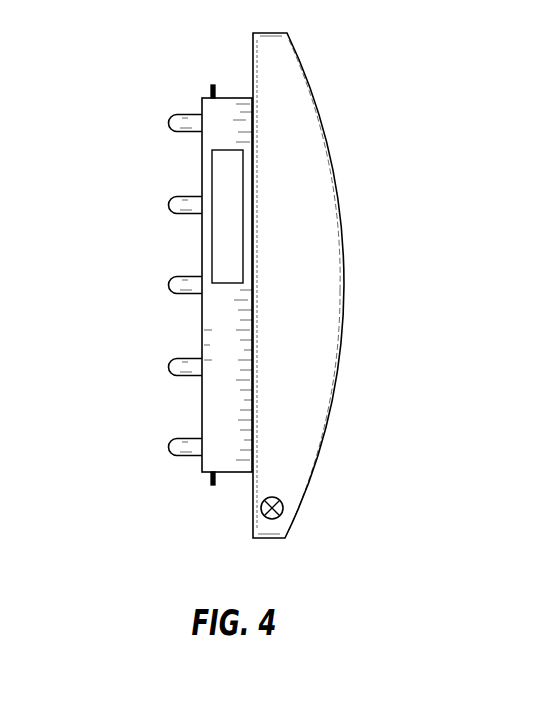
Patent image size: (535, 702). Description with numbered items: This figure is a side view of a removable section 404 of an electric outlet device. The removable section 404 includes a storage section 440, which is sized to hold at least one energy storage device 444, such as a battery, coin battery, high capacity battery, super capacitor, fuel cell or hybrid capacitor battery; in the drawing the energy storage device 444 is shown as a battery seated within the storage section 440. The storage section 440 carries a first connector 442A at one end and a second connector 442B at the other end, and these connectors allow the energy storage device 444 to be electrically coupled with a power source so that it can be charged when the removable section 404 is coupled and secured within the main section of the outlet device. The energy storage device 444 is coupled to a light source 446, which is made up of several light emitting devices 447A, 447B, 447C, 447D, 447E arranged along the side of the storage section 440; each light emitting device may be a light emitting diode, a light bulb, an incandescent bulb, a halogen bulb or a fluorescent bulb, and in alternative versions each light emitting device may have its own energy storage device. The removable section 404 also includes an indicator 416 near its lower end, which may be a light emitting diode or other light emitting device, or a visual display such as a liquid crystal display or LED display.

The removable section 404 is at (373, 177).
The storage section 440 is at (243, 98).
The first connector 442A is at (210, 94).
The second connector 442B is at (209, 478).
The energy storage device 444 is at (215, 192).
The light source 446 is at (131, 270).
The light emitting device 447A is at (168, 122).
The light emitting device 447B is at (168, 204).
The light emitting device 447C is at (168, 285).
The light emitting device 447D is at (168, 367).
The light emitting device 447E is at (168, 447).
The indicator 416 is at (283, 508).